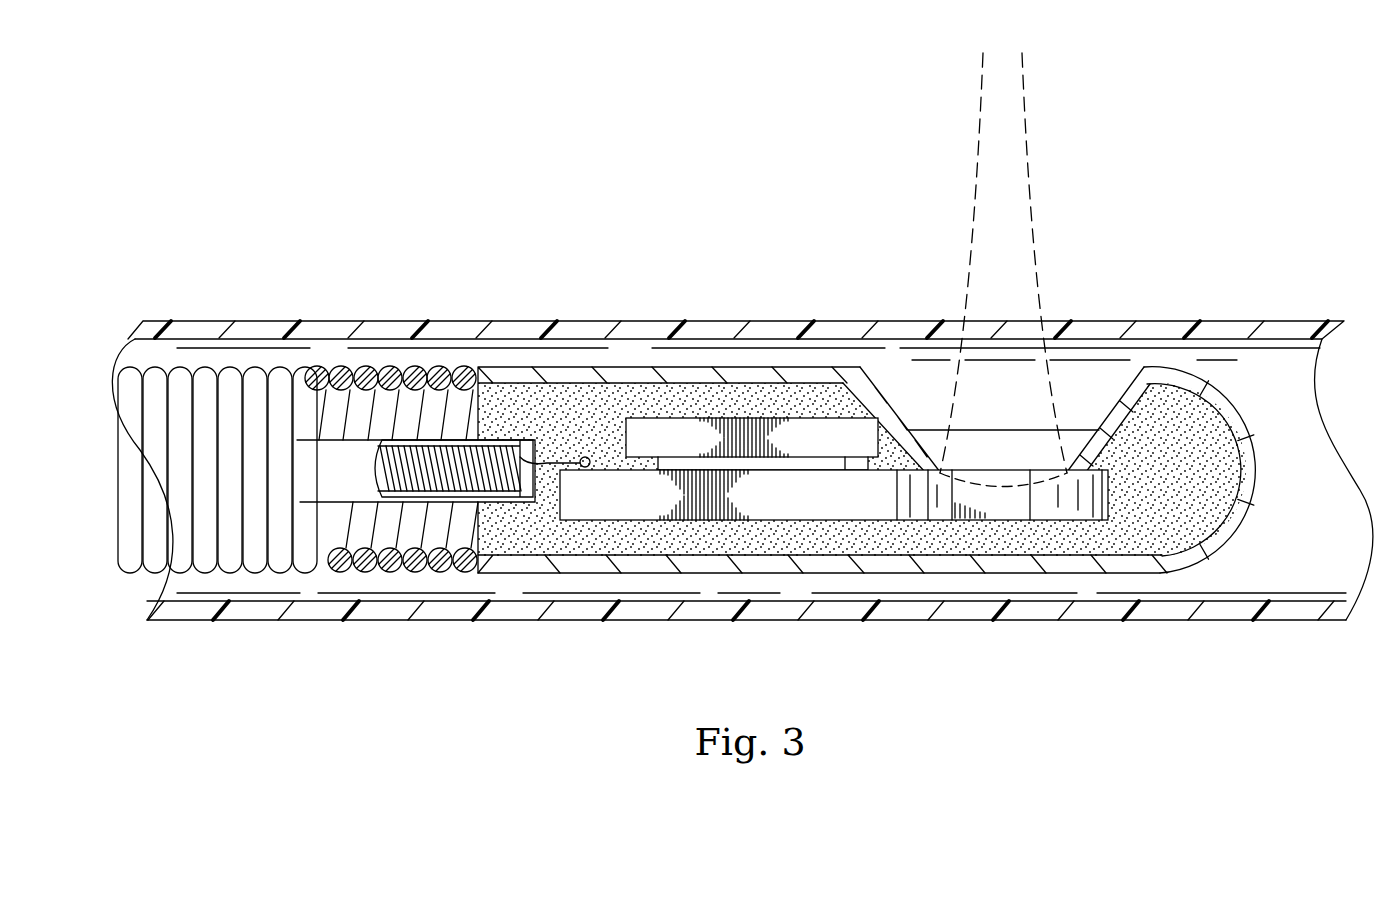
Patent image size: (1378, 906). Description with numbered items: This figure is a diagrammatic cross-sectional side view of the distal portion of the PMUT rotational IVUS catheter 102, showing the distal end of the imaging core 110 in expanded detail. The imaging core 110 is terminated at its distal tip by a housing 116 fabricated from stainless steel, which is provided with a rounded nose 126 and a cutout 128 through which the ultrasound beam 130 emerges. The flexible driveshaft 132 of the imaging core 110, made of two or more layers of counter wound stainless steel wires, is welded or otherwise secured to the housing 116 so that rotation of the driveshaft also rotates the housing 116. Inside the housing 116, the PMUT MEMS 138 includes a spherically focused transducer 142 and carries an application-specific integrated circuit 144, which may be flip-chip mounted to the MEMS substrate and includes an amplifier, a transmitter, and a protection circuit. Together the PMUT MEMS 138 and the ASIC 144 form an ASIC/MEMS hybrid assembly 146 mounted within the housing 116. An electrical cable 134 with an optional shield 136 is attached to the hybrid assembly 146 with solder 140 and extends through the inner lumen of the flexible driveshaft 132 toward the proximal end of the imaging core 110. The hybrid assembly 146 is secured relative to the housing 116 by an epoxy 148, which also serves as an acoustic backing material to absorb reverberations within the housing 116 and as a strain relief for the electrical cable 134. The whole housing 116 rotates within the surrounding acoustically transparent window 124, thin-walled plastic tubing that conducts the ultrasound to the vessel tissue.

The PMUT rotational IVUS catheter 102 is at (495, 192).
The imaging core 110 is at (330, 358).
The housing 116 is at (1083, 573).
The acoustically transparent window 124 is at (1217, 619).
The rounded nose 126 is at (1235, 400).
The cutout 128 is at (868, 372).
The ultrasound beam 130 is at (1030, 227).
The flexible driveshaft 132 is at (165, 363).
The electrical cable 134 is at (527, 445).
The shield 136 is at (322, 455).
The PMUT MEMS 138 is at (850, 510).
The solder 140 is at (583, 457).
The spherically focused transducer 142 is at (973, 483).
The application-specific integrated circuit 144 is at (650, 422).
The ASIC/MEMS hybrid assembly 146 is at (652, 522).
The epoxy 148 is at (1233, 523).